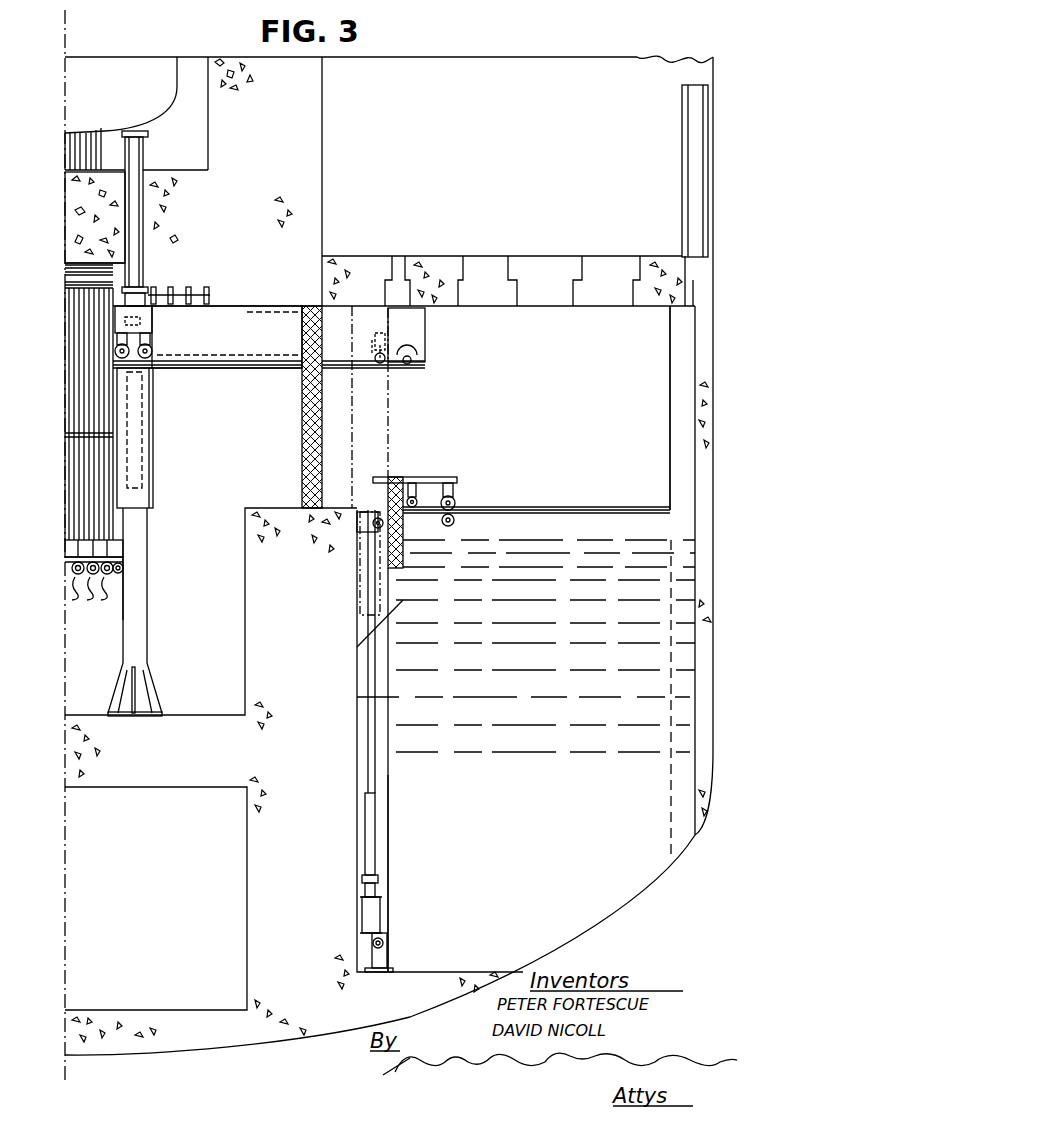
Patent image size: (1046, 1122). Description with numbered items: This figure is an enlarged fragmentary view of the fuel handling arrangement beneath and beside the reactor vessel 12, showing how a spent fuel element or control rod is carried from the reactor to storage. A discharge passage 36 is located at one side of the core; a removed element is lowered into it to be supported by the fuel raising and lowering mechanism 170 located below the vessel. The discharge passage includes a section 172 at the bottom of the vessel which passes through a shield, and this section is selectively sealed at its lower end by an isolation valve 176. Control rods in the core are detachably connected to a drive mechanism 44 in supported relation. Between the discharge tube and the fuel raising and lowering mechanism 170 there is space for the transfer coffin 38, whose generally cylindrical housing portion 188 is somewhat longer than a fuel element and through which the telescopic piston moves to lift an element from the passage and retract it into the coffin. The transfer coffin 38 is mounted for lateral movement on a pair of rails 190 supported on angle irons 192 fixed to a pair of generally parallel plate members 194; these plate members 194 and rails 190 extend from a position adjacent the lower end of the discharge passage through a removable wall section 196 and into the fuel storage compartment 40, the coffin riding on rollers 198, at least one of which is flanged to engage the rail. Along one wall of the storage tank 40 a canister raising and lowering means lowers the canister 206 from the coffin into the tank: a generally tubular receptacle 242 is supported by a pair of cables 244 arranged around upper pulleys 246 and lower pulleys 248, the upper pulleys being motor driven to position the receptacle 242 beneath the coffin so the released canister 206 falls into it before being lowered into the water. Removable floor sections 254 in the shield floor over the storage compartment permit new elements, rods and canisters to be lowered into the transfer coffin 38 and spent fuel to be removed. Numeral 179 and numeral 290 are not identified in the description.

The reactor vessel 12 is at (128, 101).
The discharge passage 36 is at (123, 152).
The discharge passage section 172 is at (125, 197).
The support plate 179 is at (193, 170).
The isolation valve 176 is at (247, 304).
The removable floor sections 254 is at (472, 258).
The plate members 194 is at (417, 335).
The angle irons 192 is at (395, 368).
The roller 198 is at (167, 368).
The rail 190 is at (240, 363).
The transfer coffin 38 is at (155, 445).
The removable wall section 196 is at (304, 433).
The fuel storage compartment 40 is at (523, 411).
The tubular housing portion 188 is at (152, 490).
The fuel raising and lowering mechanism 170 is at (158, 604).
The control rod 290 is at (72, 400).
The drive mechanism 44 is at (94, 580).
The upper pulleys 246 is at (373, 533).
The tubular receptacle 242 is at (360, 607).
The cables 244 is at (388, 790).
The canister 206 is at (373, 837).
The lower pulleys 248 is at (387, 943).